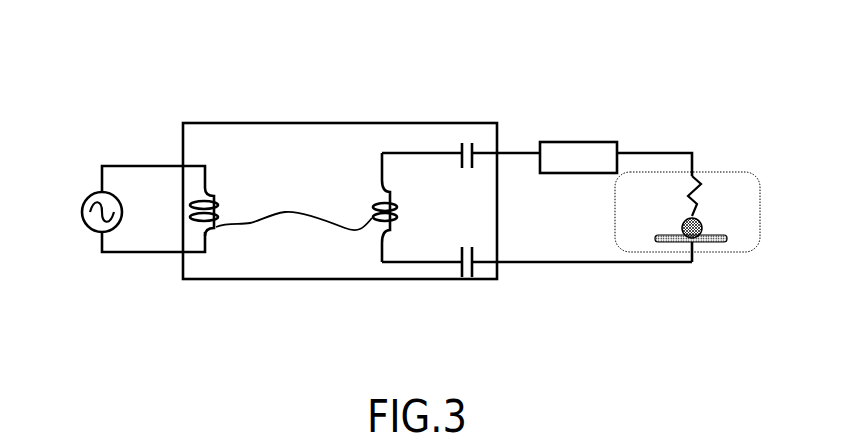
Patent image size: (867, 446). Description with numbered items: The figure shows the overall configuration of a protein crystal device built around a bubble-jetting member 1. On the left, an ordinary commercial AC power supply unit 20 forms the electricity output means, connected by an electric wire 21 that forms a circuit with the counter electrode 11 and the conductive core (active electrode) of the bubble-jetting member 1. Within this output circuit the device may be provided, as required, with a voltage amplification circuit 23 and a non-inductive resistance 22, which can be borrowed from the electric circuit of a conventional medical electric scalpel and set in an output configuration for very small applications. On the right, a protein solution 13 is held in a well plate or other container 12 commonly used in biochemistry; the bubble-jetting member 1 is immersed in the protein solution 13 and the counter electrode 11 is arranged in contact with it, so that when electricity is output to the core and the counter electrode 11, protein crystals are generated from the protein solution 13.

The AC power supply unit 20 is at (120, 202).
The electric wire 21 is at (323, 123).
The non-inductive resistance 22 is at (588, 142).
The voltage amplification circuit 23 is at (294, 214).
The bubble-jetting member 1 is at (690, 194).
The counter electrode 11 is at (706, 243).
The container 12 is at (716, 179).
The protein solution 13 is at (700, 222).